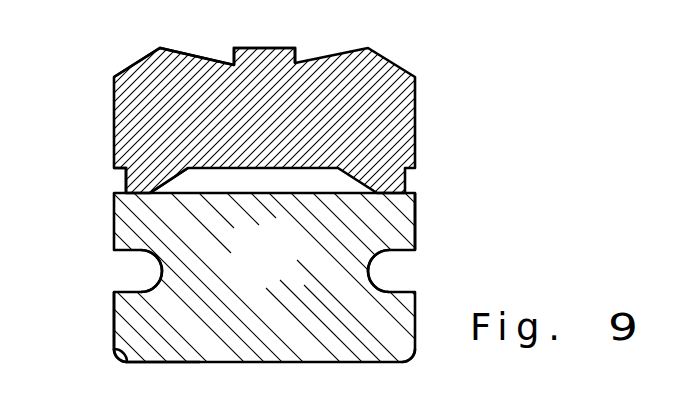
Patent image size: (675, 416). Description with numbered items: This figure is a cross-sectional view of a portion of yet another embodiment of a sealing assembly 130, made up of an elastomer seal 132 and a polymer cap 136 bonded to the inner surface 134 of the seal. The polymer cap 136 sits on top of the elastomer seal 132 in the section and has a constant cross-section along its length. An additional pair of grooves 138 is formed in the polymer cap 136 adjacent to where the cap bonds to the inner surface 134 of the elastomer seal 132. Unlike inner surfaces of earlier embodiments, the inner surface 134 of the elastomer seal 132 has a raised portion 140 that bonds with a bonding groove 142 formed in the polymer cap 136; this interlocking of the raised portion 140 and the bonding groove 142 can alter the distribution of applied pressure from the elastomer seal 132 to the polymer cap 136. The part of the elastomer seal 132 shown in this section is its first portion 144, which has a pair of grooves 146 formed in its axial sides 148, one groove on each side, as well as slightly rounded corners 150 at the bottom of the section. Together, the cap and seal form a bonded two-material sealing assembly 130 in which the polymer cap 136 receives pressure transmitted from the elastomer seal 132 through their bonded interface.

The sealing assembly 130 is at (291, 209).
The elastomer seal 132 is at (140, 337).
The inner surface 134 is at (170, 181).
The polymer cap 136 is at (393, 122).
The grooves 138 is at (115, 182).
The raised portion 140 is at (288, 167).
The bonding groove 142 is at (208, 165).
The first portion 144 is at (285, 267).
The grooves 146 is at (376, 258).
The axial sides 148 is at (415, 223).
The rounded corners 150 is at (118, 360).